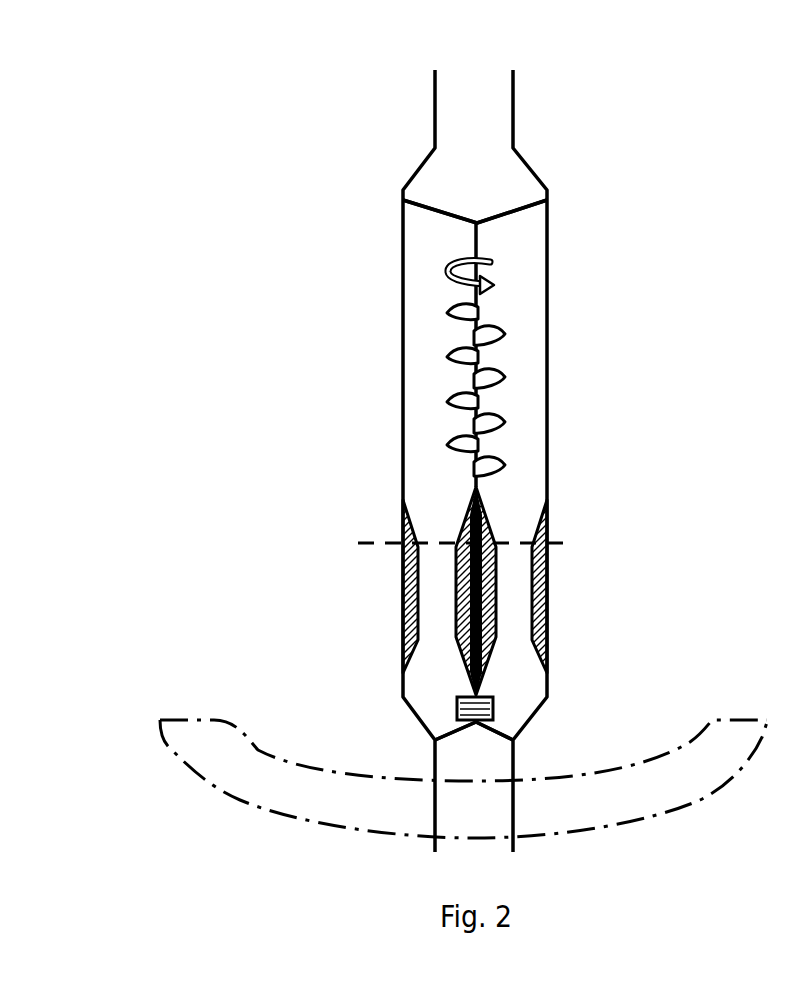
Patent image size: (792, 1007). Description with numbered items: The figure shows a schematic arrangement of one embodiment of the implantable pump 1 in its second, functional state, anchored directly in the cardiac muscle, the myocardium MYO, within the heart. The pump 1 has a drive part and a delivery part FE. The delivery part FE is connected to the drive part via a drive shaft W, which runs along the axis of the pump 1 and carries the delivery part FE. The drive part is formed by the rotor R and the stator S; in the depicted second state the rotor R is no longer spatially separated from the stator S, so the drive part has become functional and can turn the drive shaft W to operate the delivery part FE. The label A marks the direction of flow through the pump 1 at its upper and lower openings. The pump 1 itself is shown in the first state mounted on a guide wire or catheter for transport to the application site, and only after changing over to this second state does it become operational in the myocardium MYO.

The pump 1 is at (700, 146).
The axial flow direction (inlet/outlet) A is at (478, 205).
The delivery part FE is at (427, 318).
The drive shaft W is at (500, 355).
The rotor R is at (445, 505).
The stator S is at (385, 598).
The myocardium MYO is at (183, 780).